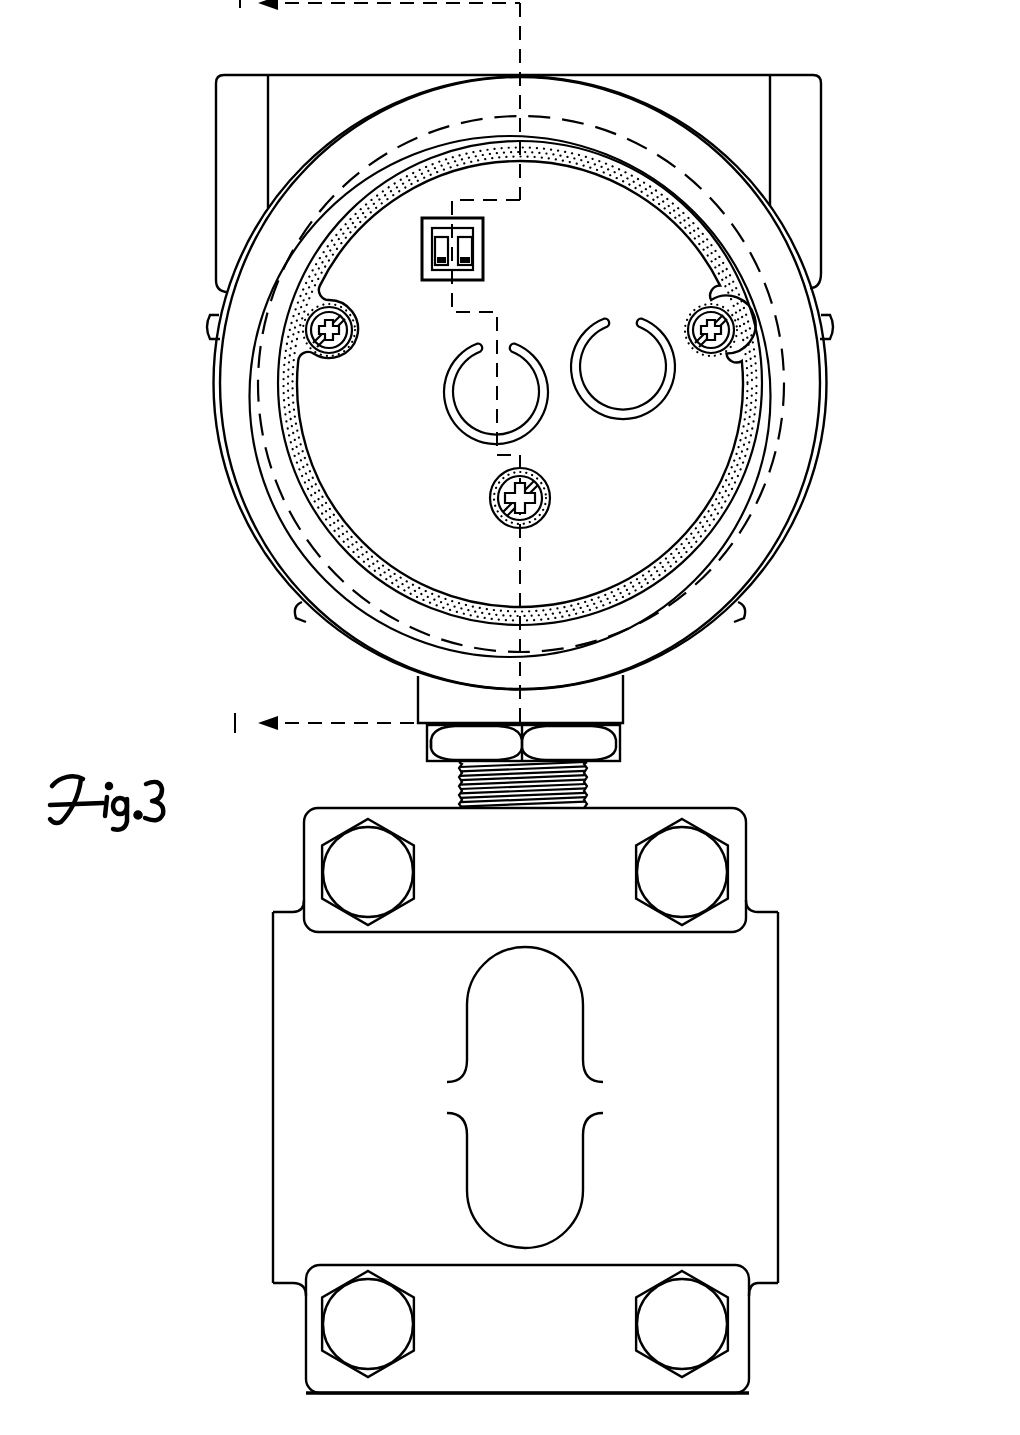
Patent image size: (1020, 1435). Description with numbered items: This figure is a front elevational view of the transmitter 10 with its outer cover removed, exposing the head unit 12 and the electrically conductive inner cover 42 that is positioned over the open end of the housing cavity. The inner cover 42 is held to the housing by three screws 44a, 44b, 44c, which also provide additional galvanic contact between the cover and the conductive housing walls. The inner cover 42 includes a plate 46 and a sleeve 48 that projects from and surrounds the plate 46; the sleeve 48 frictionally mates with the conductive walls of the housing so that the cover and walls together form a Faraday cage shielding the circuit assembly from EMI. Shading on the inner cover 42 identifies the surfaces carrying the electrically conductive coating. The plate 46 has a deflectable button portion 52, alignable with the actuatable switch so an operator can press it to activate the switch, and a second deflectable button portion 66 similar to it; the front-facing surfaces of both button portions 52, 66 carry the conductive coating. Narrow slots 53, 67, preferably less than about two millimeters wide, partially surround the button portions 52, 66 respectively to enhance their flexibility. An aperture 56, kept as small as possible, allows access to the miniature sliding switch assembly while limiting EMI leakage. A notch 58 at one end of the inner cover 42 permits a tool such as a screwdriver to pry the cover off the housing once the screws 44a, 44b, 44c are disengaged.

The transmitter 10 is at (120, 114).
The head unit 12 is at (848, 648).
The inner cover 42 is at (347, 395).
The screw 44a is at (308, 332).
The screw 44b is at (490, 499).
The screw 44c is at (726, 337).
The plate 46 is at (347, 477).
The sleeve 48 is at (625, 160).
The deflectable button portion 52 is at (525, 408).
The narrow slot 53 is at (550, 408).
The aperture 56 is at (430, 237).
The notch 58 is at (550, 633).
The second deflectable button portion 66 is at (643, 390).
The narrow slot 67 is at (673, 385).